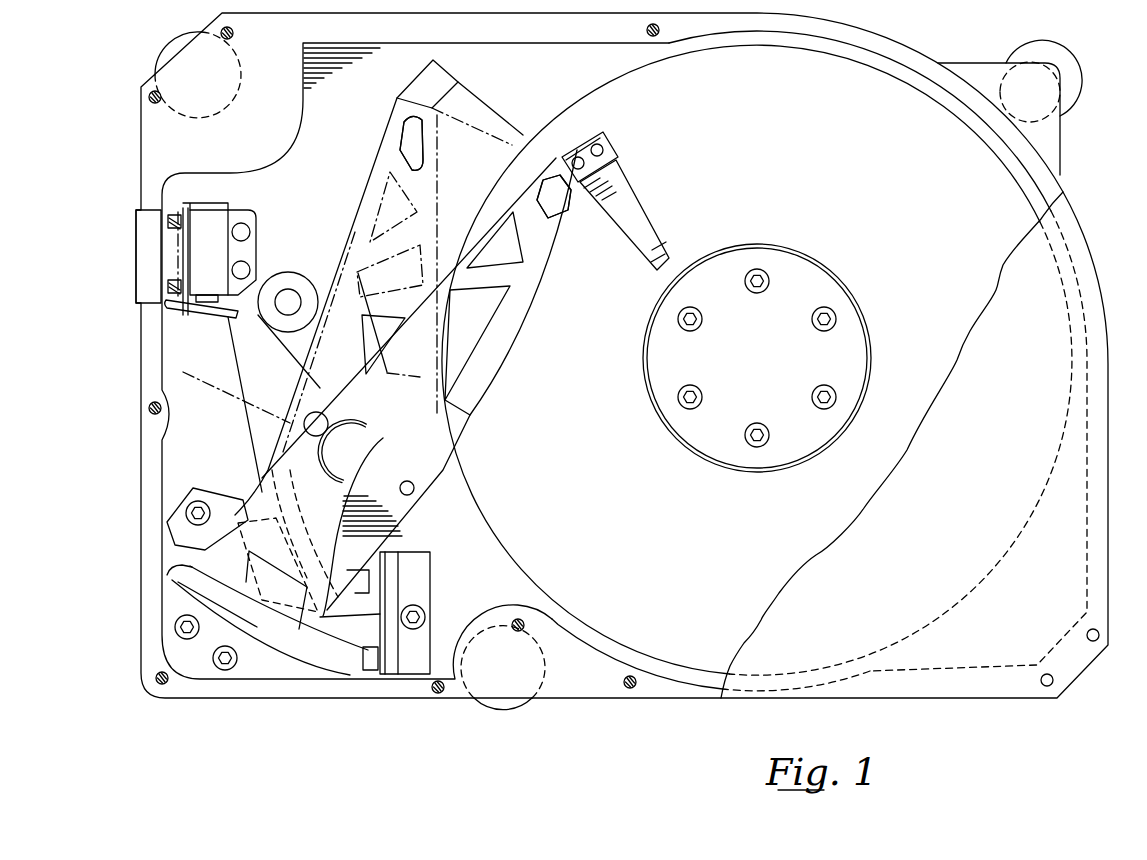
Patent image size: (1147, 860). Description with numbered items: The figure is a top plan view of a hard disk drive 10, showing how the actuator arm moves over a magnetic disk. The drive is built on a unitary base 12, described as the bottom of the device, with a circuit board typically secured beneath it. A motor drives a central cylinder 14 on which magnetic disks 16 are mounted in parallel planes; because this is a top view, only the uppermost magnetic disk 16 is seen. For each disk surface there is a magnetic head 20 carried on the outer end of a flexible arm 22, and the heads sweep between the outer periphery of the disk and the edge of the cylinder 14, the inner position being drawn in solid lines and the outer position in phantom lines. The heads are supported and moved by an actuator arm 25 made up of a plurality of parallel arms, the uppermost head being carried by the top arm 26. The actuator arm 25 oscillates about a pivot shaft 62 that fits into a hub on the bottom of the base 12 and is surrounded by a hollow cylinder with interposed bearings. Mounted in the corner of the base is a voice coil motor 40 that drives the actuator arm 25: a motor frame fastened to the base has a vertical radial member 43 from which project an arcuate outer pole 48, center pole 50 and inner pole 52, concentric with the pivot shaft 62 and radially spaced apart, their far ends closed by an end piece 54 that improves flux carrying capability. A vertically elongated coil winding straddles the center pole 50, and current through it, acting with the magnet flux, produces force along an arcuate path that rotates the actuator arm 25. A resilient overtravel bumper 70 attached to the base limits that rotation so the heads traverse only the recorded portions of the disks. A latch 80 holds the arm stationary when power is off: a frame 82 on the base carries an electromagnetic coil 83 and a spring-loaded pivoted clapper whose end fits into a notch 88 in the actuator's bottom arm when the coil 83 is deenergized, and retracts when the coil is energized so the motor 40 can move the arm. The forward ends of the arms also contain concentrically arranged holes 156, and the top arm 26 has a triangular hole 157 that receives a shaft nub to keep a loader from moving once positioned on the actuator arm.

The hard disk drive 10 is at (957, 710).
The unitary base 12 is at (1060, 138).
The central cylinder 14 is at (757, 358).
The magnetic disk 16 is at (757, 360).
The magnetic head 20 is at (665, 260).
The flexible arm 22 is at (641, 201).
The actuator arm 25 is at (398, 335).
The top arm 26 is at (484, 376).
The voice coil motor 40 is at (325, 657).
The vertical radial member 43 is at (190, 570).
The outer pole 48 is at (257, 650).
The center pole 50 is at (365, 640).
The inner pole 52 is at (366, 581).
The end piece 54 is at (388, 604).
The pivot shaft 62 is at (433, 482).
The resilient overtravel bumper 70 is at (295, 272).
The latch 80 is at (232, 238).
The frame 82 is at (215, 203).
The electromagnetic coil 83 is at (223, 258).
The notch 88 is at (232, 312).
The concentrically arranged holes 156 is at (415, 152).
The triangular hole 157 is at (384, 440).